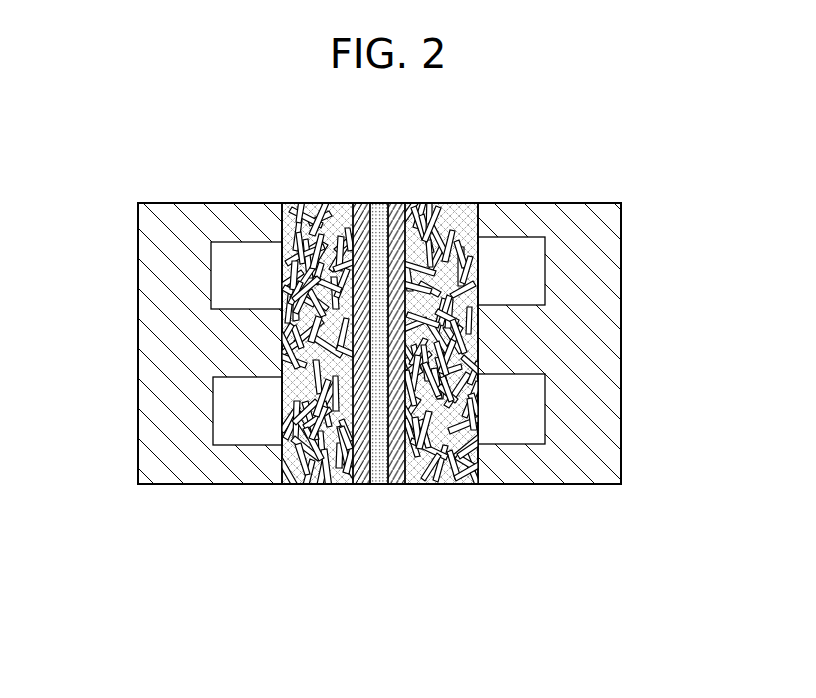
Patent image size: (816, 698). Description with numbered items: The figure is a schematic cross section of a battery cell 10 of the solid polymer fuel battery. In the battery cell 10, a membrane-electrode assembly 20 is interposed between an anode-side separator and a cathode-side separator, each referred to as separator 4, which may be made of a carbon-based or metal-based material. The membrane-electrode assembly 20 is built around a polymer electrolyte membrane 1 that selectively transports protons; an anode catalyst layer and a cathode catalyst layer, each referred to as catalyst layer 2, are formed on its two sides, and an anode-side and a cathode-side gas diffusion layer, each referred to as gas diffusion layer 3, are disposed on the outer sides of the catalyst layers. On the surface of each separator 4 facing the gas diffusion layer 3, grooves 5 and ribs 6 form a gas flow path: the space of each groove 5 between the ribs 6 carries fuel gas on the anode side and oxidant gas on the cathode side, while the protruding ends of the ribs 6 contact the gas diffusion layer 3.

The battery cell 10 is at (628, 152).
The membrane-electrode assembly 20 is at (477, 200).
The polymer electrolyte membrane 1 is at (378, 485).
The catalyst layer 2 is at (362, 485).
The gas diffusion layer 3 is at (302, 485).
The separator 4 is at (185, 485).
The groove 5 is at (225, 273).
The rib 6 is at (228, 470).